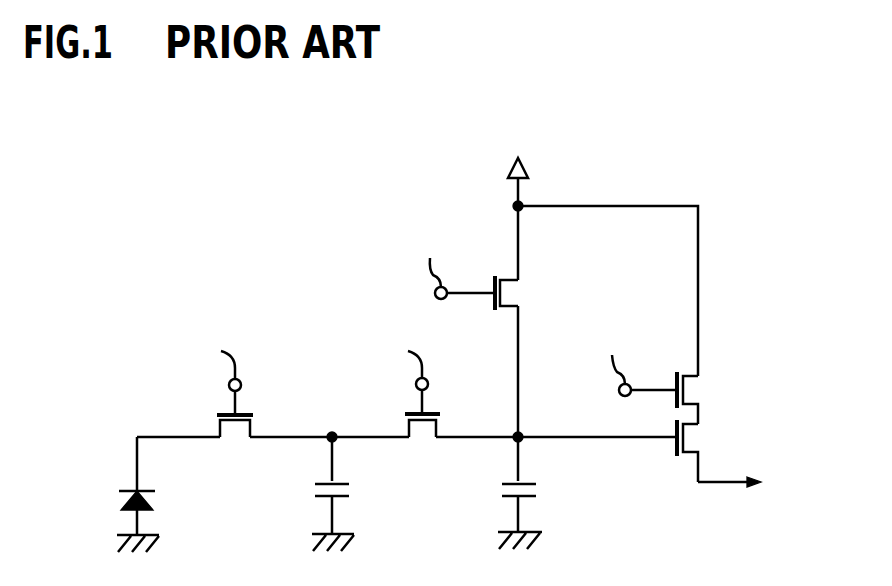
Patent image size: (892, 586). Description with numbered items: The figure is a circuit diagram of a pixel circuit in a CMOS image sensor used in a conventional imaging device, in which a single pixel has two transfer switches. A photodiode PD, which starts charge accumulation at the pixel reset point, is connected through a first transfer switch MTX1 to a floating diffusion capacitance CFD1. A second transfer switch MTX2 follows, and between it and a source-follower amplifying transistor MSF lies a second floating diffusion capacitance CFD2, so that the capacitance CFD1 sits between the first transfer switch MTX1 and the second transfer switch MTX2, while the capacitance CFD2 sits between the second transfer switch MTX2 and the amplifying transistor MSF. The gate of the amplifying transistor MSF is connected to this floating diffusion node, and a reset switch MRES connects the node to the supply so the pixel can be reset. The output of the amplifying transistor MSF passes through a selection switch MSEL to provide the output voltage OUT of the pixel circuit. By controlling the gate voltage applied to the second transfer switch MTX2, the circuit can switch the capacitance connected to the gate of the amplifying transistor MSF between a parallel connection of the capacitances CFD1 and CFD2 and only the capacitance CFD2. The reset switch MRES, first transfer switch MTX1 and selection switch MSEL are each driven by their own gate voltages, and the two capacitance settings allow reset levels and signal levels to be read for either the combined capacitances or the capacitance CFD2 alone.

The photodiode PD is at (114, 494).
The first transfer switch MTX1 is at (236, 431).
The second transfer switch MTX2 is at (421, 431).
The floating diffusion capacitance CFD1 is at (304, 494).
The floating diffusion capacitance CFD2 is at (491, 493).
The reset switch MRES is at (519, 293).
The selection switch MSEL is at (705, 398).
The source-follower amplifying transistor MSF is at (718, 451).
The output voltage OUT is at (759, 482).